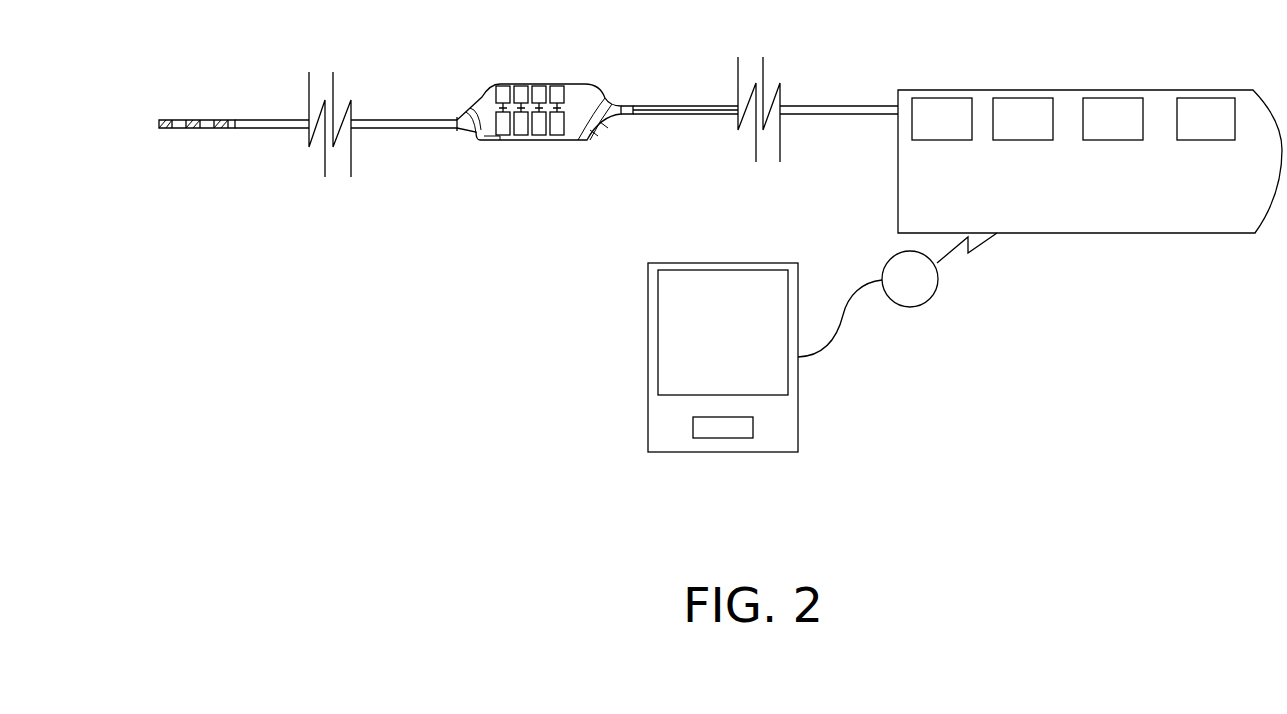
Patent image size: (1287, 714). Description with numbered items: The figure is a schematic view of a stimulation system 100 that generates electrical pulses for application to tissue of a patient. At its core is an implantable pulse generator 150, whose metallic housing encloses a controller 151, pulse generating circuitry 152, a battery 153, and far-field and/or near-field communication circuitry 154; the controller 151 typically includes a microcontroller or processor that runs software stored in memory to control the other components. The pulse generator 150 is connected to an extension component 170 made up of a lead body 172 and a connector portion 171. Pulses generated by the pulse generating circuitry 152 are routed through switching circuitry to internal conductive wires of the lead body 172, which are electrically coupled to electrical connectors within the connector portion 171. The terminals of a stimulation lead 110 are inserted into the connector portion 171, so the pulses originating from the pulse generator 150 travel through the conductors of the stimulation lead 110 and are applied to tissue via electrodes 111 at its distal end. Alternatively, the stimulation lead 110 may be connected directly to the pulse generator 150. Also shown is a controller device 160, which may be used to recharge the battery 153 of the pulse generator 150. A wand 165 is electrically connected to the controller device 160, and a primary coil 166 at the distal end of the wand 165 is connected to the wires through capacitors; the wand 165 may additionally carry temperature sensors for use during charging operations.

The stimulation system 100 is at (462, 345).
The stimulation lead 110 is at (263, 129).
The electrodes 111 is at (207, 130).
The implantable pulse generator 150 is at (1112, 235).
The controller 151 is at (966, 131).
The pulse generating circuitry 152 is at (1047, 131).
The battery 153 is at (1137, 131).
The communication circuitry 154 is at (1230, 131).
The controller device 160 is at (755, 262).
The wand 165 is at (852, 290).
The coil 166 is at (910, 309).
The extension component 170 is at (614, 95).
The connector portion 171 is at (538, 84).
The lead body 172 is at (664, 115).